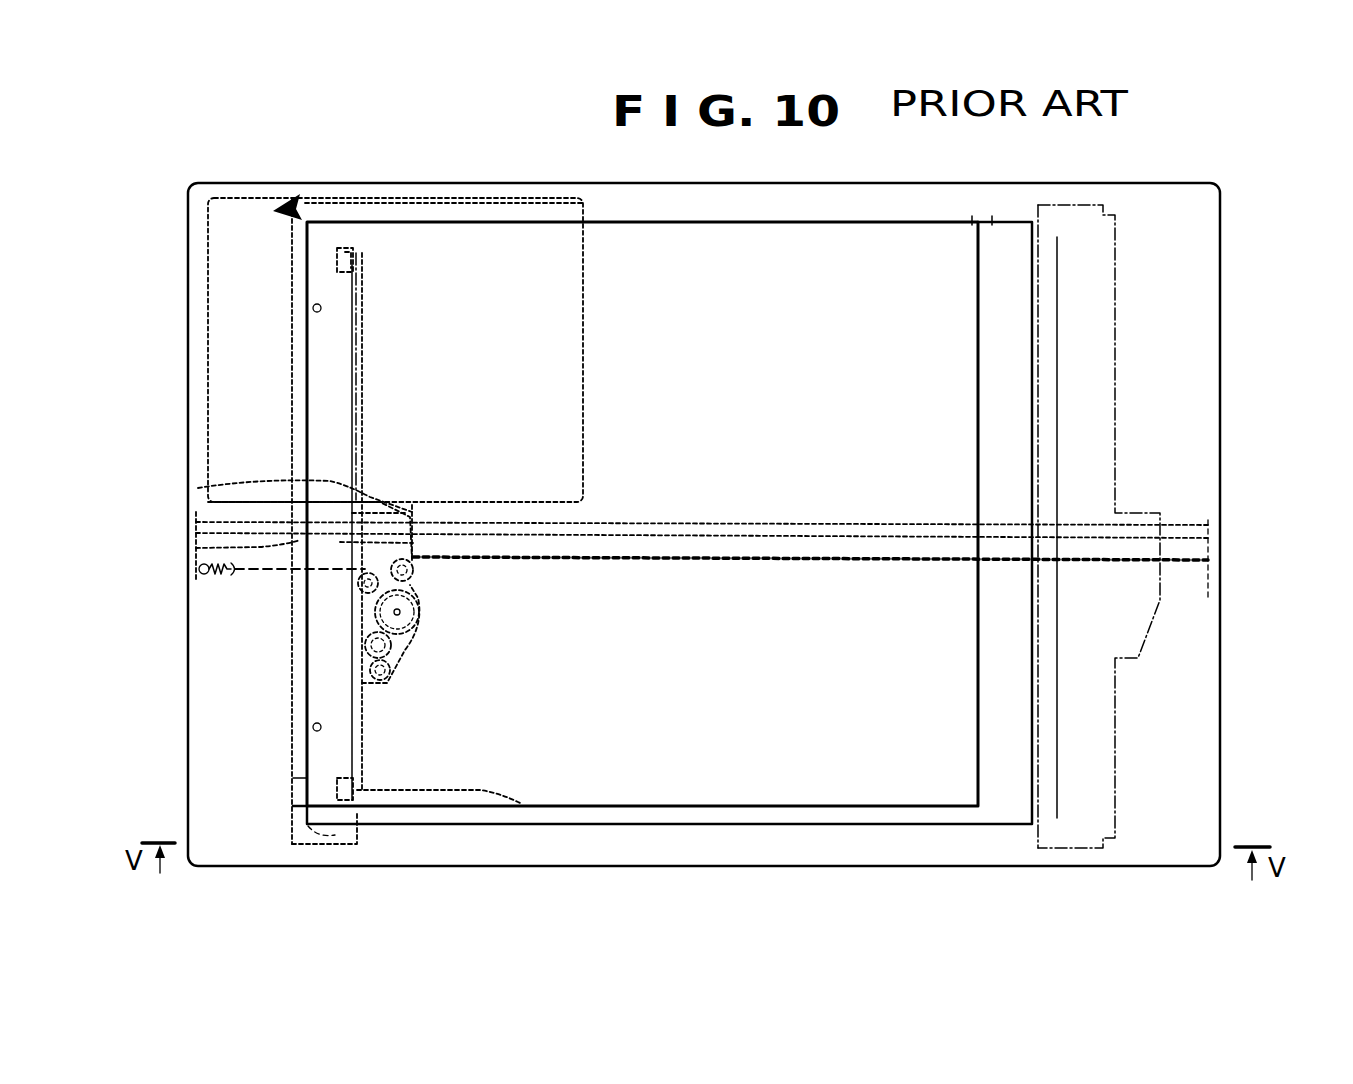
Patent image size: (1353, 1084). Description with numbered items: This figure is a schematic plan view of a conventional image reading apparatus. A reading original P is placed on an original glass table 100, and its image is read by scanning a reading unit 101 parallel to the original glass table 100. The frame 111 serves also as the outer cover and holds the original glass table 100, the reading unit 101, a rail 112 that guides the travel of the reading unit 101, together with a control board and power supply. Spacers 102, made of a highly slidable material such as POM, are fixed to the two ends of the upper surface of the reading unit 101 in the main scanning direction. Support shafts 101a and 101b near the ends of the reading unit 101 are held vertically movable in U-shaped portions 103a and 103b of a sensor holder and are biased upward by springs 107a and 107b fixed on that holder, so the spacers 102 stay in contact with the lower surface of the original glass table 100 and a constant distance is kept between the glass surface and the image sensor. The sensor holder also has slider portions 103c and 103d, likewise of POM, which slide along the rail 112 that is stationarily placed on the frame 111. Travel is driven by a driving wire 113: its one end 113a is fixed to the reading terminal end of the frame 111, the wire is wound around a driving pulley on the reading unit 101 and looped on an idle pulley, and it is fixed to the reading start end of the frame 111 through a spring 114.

The original glass table 100 is at (798, 820).
The reading unit 101 is at (292, 842).
The support shaft 101a is at (372, 797).
The support shaft 101b is at (362, 232).
The spacer 102 is at (345, 208).
The U-shaped portion 103a is at (460, 792).
The U-shaped portion 103b is at (373, 245).
The slider portion 103c is at (195, 540).
The slider portion 103d is at (198, 488).
The spring 107a is at (312, 727).
The spring 107b is at (312, 310).
The frame 111 is at (207, 783).
The rail 112 is at (905, 530).
The driving wire 113 is at (948, 562).
The end of driving wire 113a is at (1212, 540).
The spring 114 is at (192, 577).
The reading original P is at (696, 800).